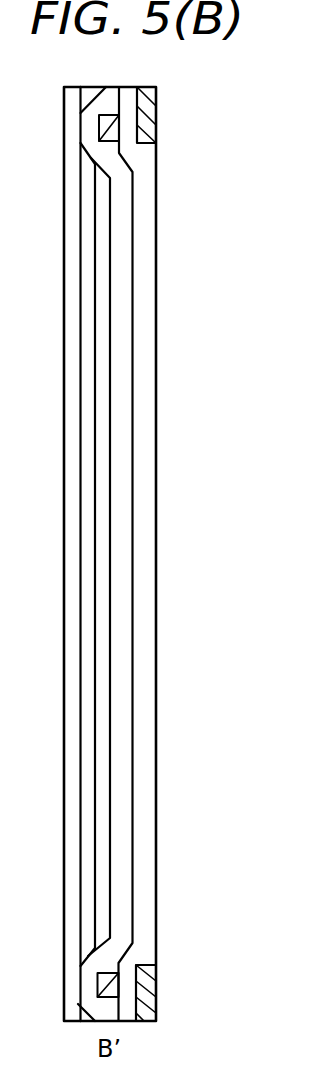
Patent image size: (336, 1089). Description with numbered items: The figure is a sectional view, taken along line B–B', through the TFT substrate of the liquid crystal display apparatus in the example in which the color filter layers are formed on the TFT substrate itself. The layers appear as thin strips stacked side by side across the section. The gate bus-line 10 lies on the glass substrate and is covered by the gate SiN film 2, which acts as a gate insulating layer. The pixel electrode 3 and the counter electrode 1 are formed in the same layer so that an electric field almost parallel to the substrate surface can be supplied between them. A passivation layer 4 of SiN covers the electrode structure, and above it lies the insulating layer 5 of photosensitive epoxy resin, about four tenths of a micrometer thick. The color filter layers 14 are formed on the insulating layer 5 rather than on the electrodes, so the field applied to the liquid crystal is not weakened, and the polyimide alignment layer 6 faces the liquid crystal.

The counter electrode 1 is at (156, 110).
The gate SiN film 2 is at (138, 597).
The pixel electrode 3 is at (104, 129).
The passivation layer 4 is at (122, 683).
The insulating layer 5 is at (102, 362).
The alignment layer 6 is at (72, 403).
The gate bus-line 10 is at (154, 991).
The color filter layers 14 is at (85, 270).